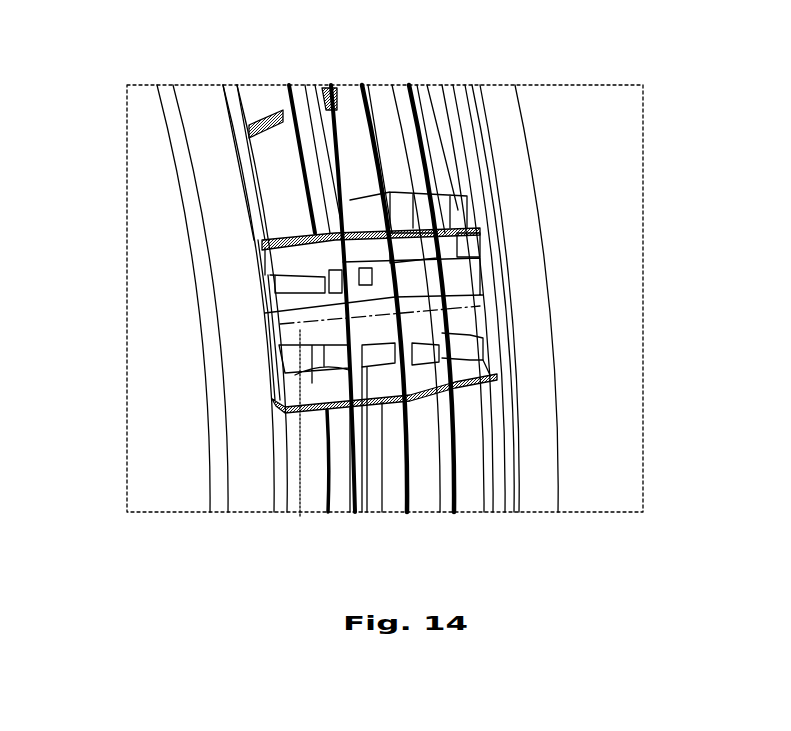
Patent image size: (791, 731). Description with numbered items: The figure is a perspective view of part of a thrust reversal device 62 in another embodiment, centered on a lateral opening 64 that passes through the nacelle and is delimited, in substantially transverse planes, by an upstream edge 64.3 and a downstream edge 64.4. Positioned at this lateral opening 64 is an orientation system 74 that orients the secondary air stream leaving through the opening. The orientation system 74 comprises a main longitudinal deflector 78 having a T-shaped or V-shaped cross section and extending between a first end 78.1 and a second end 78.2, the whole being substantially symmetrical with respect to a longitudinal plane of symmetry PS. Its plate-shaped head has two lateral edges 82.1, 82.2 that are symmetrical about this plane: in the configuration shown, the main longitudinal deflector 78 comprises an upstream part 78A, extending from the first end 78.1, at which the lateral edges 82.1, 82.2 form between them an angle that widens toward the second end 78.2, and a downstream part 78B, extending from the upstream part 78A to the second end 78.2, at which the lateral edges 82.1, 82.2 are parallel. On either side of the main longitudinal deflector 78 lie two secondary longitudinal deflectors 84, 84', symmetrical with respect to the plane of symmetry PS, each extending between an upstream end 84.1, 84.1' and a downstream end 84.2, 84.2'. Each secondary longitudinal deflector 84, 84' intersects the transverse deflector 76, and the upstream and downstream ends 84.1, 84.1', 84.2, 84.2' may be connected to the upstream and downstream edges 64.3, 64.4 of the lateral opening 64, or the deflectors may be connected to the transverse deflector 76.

The thrust reversal device 62 is at (435, 521).
The lateral opening 64 is at (487, 142).
The upstream edge 64.3 is at (249, 112).
The downstream edge 64.4 is at (466, 96).
The orientation system 74 is at (305, 166).
The transverse deflector 76 is at (397, 118).
The main longitudinal deflector 78 is at (493, 316).
The upstream part 78A is at (337, 110).
The downstream part 78B is at (428, 105).
The first end 78.1 is at (285, 348).
The second end 78.2 is at (483, 295).
The lateral edge 82.1 is at (292, 303).
The lateral edge 82.2 is at (312, 345).
The secondary longitudinal deflector 84 is at (478, 393).
The upstream end 84.1 is at (159, 354).
The downstream end 84.2 is at (533, 420).
The secondary longitudinal deflector 84' is at (552, 204).
The upstream end 84.1' is at (263, 220).
The downstream end 84.2' is at (592, 230).
The longitudinal plane of symmetry PS is at (294, 438).